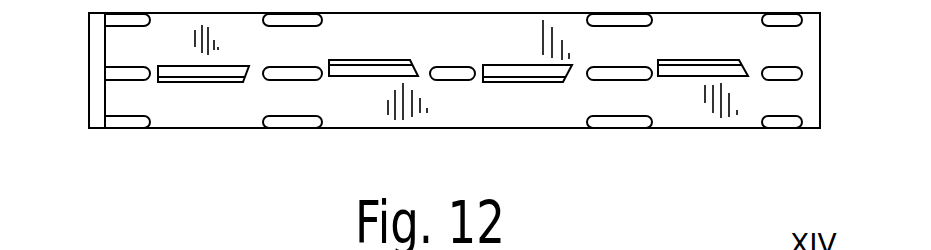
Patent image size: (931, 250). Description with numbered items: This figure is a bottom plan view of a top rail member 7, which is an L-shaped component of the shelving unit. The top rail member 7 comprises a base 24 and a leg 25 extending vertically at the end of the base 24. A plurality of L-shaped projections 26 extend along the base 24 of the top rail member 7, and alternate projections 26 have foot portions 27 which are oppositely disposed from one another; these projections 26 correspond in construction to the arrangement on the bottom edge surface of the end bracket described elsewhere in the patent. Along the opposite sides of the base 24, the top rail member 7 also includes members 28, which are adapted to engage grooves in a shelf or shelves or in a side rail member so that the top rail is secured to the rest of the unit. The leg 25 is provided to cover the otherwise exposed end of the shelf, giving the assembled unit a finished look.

The top rail member 7 is at (712, 134).
The base 24 is at (355, 103).
The leg 25 is at (98, 100).
The L-shaped projections 26 is at (513, 83).
The foot portions 27 is at (552, 83).
The members 28 is at (790, 18).